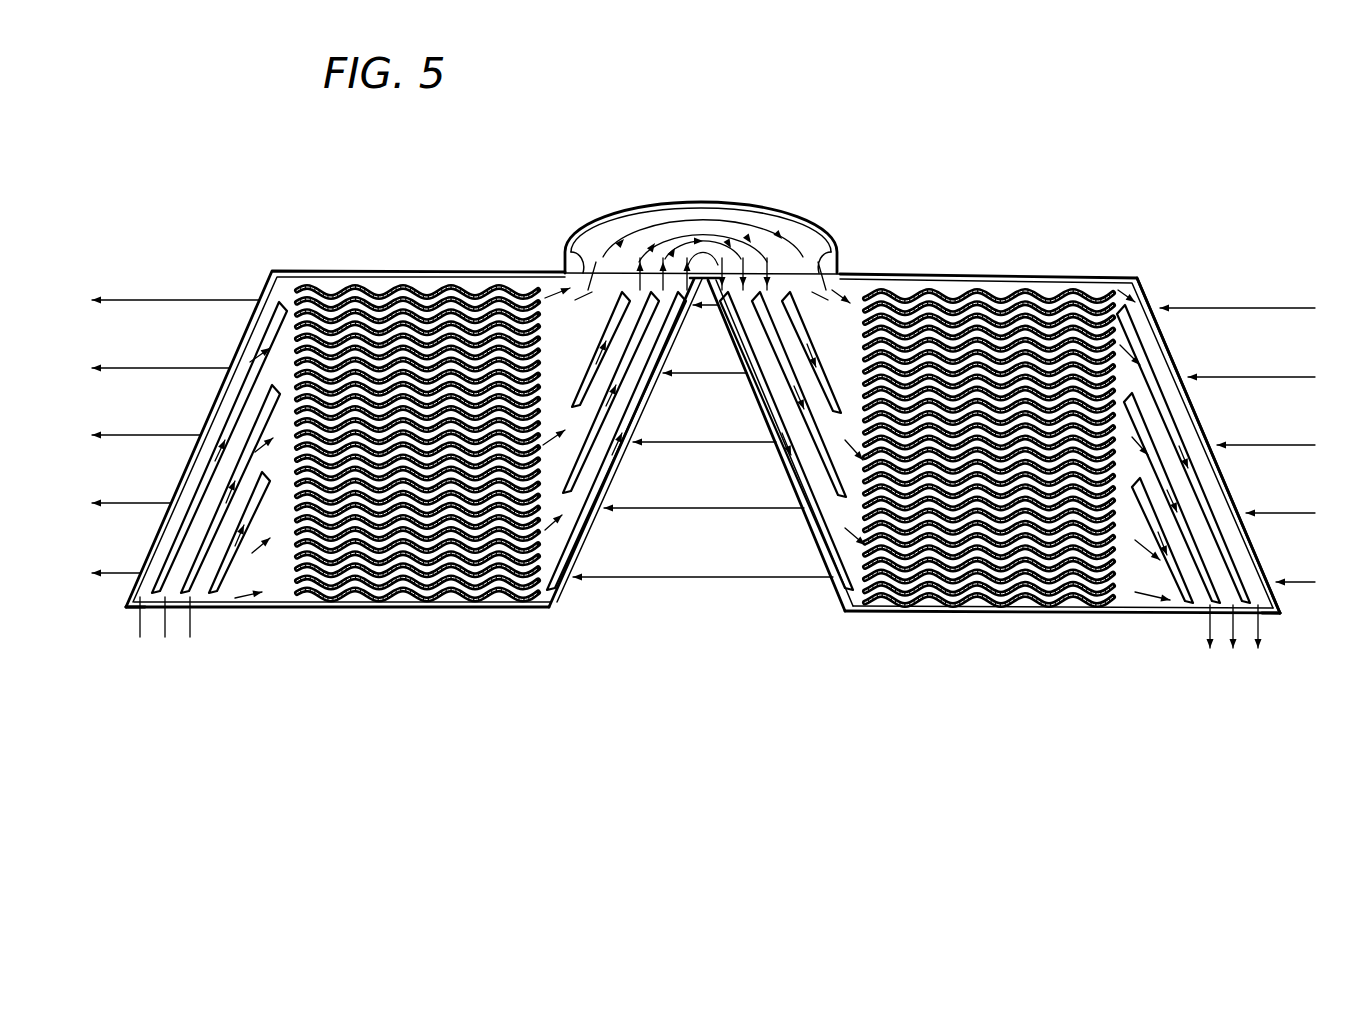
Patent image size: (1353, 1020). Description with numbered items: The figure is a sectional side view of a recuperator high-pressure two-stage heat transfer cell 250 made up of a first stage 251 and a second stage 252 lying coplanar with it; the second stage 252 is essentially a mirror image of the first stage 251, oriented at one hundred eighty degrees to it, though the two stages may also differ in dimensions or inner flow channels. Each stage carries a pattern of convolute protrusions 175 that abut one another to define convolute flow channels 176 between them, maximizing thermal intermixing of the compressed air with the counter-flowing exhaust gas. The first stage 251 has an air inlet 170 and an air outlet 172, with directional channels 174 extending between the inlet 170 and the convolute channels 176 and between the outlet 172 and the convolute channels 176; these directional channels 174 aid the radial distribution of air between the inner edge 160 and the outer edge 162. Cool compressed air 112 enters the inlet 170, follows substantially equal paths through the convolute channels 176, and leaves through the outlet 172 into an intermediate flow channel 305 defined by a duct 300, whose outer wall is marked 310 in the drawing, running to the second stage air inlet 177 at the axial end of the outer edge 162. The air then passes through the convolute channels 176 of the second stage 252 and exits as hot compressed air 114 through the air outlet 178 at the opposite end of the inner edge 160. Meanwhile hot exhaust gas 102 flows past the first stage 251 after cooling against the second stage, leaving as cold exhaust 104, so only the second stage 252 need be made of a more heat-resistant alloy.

The exhaust gas 102 is at (1237, 445).
The cold exhaust 104 is at (175, 437).
The cool compressed air 112 is at (162, 635).
The hot compressed air 114 is at (1241, 642).
The inner edge 160 is at (325, 607).
The outer edge 162 is at (292, 270).
The air inlet 170 is at (143, 605).
The air outlet 172 is at (566, 254).
The directional channels 174 is at (250, 487).
The convolute protrusions 175 is at (406, 597).
The convolute flow channels 176 is at (476, 585).
The air inlet 177 is at (835, 265).
The air outlet 178 is at (1255, 610).
The two-stage heat transfer cell 250 is at (938, 117).
The first stage 251 is at (452, 268).
The second stage 252 is at (965, 270).
The duct 300 is at (708, 200).
The intermediate flow channel 305 is at (765, 215).
The outer dome wall 310 is at (648, 205).